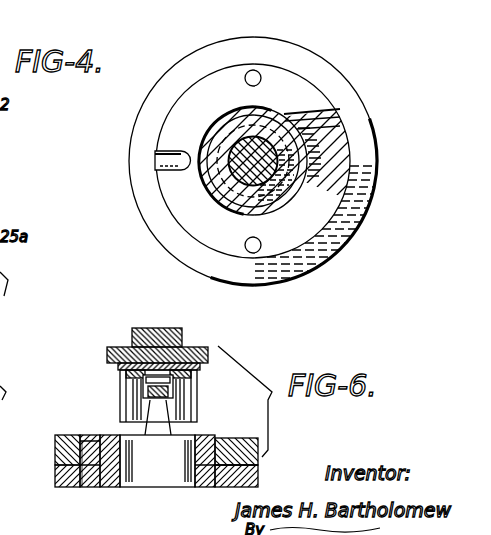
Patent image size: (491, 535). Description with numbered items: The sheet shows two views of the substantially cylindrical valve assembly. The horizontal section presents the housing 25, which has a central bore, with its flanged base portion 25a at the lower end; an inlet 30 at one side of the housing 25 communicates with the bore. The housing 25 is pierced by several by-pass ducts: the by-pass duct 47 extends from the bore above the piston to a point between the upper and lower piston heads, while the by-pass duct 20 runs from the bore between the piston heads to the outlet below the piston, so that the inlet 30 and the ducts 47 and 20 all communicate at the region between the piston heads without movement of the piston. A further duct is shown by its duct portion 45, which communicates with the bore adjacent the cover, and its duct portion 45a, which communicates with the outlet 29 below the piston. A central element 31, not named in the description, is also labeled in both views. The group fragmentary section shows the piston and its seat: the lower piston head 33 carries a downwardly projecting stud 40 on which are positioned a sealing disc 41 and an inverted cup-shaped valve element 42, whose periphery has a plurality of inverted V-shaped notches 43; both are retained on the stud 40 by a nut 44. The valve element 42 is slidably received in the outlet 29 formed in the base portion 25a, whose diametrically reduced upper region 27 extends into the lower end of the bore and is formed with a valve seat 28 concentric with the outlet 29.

In FIG. 4, the by-pass duct 20 is at (262, 72).
In FIG. 4, the housing 25 is at (305, 80).
In FIG. 6, the housing 25 is at (57, 450).
In FIG. 4, the flanged base portion 25a is at (378, 162).
In FIG. 6, the flanged base portion 25a is at (57, 480).
In FIG. 4, the inlet 30 is at (340, 148).
In FIG. 4, the hub 31 is at (232, 180).
In FIG. 6, the hub 31 is at (158, 329).
In FIG. 4, the duct portion 45 is at (168, 161).
In FIG. 4, the by-pass duct 47 is at (251, 253).
In FIG. 6, the lower piston head 33 is at (107, 353).
In FIG. 6, the sealing disc 41 is at (118, 368).
In FIG. 6, the inverted cup-shaped valve element 42 is at (120, 384).
In FIG. 6, the nut 44 is at (197, 378).
In FIG. 6, the stud 40 is at (170, 400).
In FIG. 6, the valve seat 28 is at (133, 432).
In FIG. 6, the diametrically reduced upper region 27 is at (245, 401).
In FIG. 6, the inverted V-shaped notches 43 is at (168, 398).
In FIG. 6, the outlet 29 is at (158, 478).
In FIG. 6, the duct portion 45a is at (90, 478).